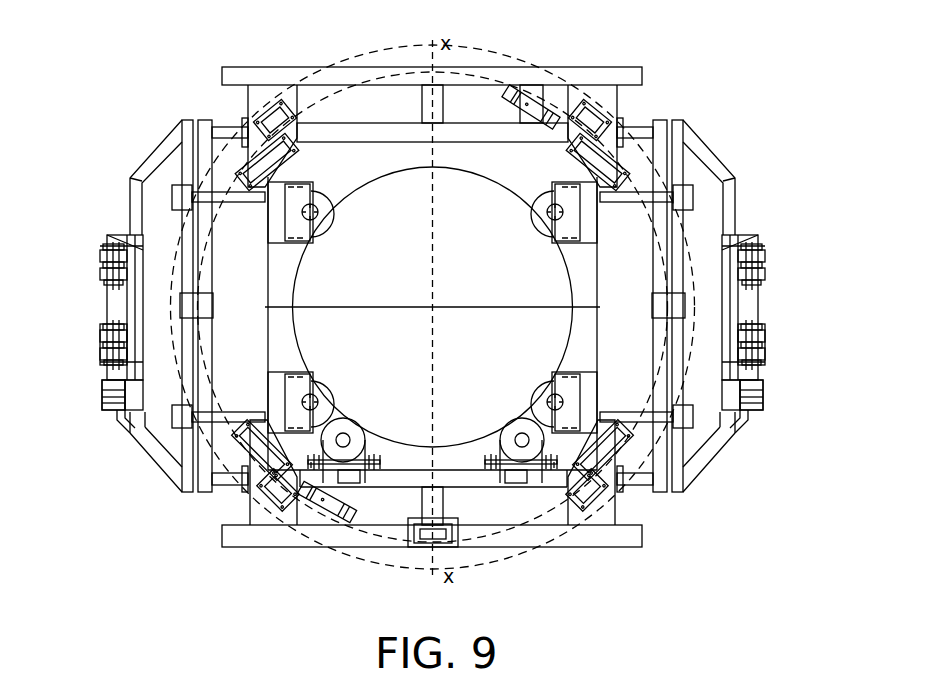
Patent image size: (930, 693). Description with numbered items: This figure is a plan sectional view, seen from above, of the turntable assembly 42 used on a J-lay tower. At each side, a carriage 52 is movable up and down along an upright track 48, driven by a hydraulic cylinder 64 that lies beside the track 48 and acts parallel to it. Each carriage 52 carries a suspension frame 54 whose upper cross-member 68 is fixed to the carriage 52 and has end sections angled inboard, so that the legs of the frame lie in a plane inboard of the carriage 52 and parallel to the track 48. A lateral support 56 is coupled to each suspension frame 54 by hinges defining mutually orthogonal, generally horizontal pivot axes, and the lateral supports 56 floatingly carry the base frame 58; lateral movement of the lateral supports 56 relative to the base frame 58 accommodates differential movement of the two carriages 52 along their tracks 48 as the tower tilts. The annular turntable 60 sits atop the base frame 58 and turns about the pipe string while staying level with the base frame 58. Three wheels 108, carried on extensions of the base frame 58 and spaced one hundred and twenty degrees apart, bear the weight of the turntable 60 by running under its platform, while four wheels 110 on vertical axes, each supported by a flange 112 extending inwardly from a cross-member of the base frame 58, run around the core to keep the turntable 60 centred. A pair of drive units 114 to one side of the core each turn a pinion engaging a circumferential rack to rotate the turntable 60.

The turntable assembly 42 is at (110, 57).
The track 48 is at (100, 268).
The carriage 52 is at (748, 312).
The suspension frame 54 is at (134, 165).
The lateral support 56 is at (646, 126).
The base frame 58 is at (264, 64).
The annular turntable 60 is at (372, 558).
The hydraulic cylinder 64 is at (100, 407).
The upper cross-member 68 is at (740, 206).
The wheel 108 is at (282, 160).
The wheel 110 is at (324, 215).
The flange 112 is at (310, 240).
The drive unit 114 is at (346, 455).